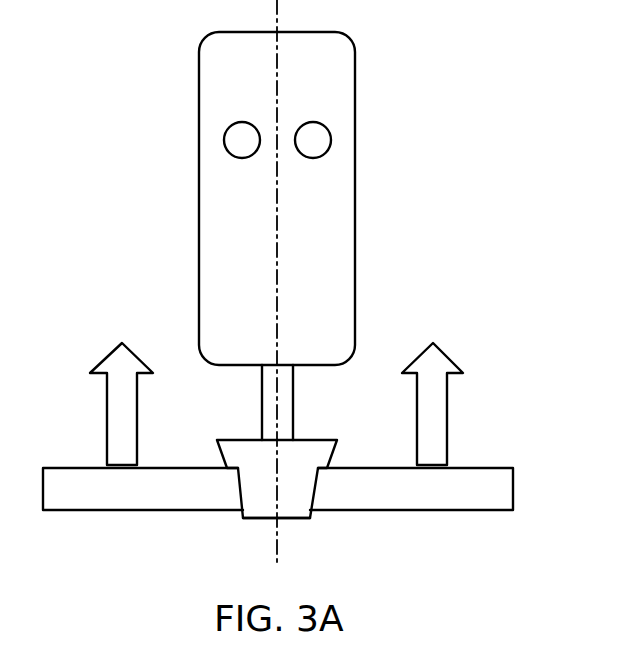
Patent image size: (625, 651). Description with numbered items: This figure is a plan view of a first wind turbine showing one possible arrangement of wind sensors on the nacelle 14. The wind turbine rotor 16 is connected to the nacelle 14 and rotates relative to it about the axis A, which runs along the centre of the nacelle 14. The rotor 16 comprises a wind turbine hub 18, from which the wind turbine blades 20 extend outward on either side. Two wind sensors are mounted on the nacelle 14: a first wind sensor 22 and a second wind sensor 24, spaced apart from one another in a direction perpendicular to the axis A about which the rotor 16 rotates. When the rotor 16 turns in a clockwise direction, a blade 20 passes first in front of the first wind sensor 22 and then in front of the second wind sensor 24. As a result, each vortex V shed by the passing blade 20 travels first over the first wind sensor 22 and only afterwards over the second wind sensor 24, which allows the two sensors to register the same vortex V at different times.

The axis A is at (280, 22).
The nacelle 14 is at (356, 206).
The first wind sensor 22 is at (224, 140).
The second wind sensor 24 is at (331, 140).
The wind turbine rotor 16 is at (253, 520).
The wind turbine hub 18 is at (297, 518).
The wind turbine blade 20 is at (108, 510).
The vortex V is at (107, 395).